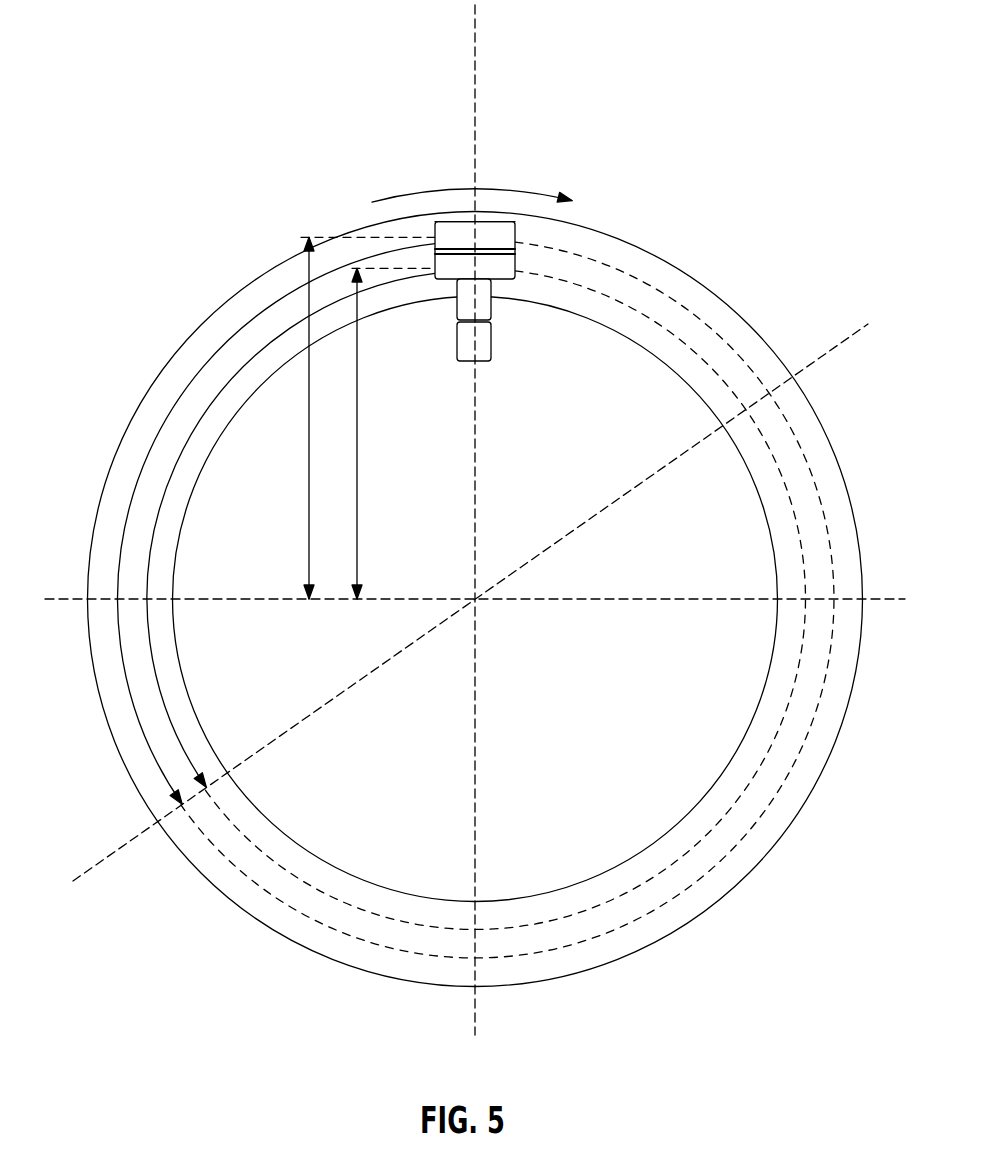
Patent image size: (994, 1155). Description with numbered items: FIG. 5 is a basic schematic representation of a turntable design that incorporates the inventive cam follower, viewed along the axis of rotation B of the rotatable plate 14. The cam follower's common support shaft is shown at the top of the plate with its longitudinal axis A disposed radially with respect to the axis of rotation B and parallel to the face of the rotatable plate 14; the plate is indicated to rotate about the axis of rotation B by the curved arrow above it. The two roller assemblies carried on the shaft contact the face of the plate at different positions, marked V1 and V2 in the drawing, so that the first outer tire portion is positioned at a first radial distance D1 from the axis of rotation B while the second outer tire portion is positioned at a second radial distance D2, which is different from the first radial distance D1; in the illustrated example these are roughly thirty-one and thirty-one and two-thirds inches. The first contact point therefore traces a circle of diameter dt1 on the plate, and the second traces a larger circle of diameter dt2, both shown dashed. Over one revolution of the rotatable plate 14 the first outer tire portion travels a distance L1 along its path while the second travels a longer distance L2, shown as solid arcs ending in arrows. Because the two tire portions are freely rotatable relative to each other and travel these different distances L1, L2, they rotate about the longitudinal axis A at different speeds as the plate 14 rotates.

The rotatable plate 14 is at (740, 868).
The longitudinal axis A is at (477, 60).
The axis of rotation B is at (478, 600).
The distance travelled by the first outer tire portion L1 is at (157, 505).
The distance travelled by the second outer tire portion L2 is at (163, 415).
The diameter of the rotating plate at first contact dt1 is at (659, 319).
The diameter of the rotating plate at second contact dt2 is at (617, 265).
The first radial distance D1 is at (358, 432).
The second radial distance D2 is at (308, 420).
The first tool position V1 is at (437, 251).
The second tool position V2 is at (437, 238).